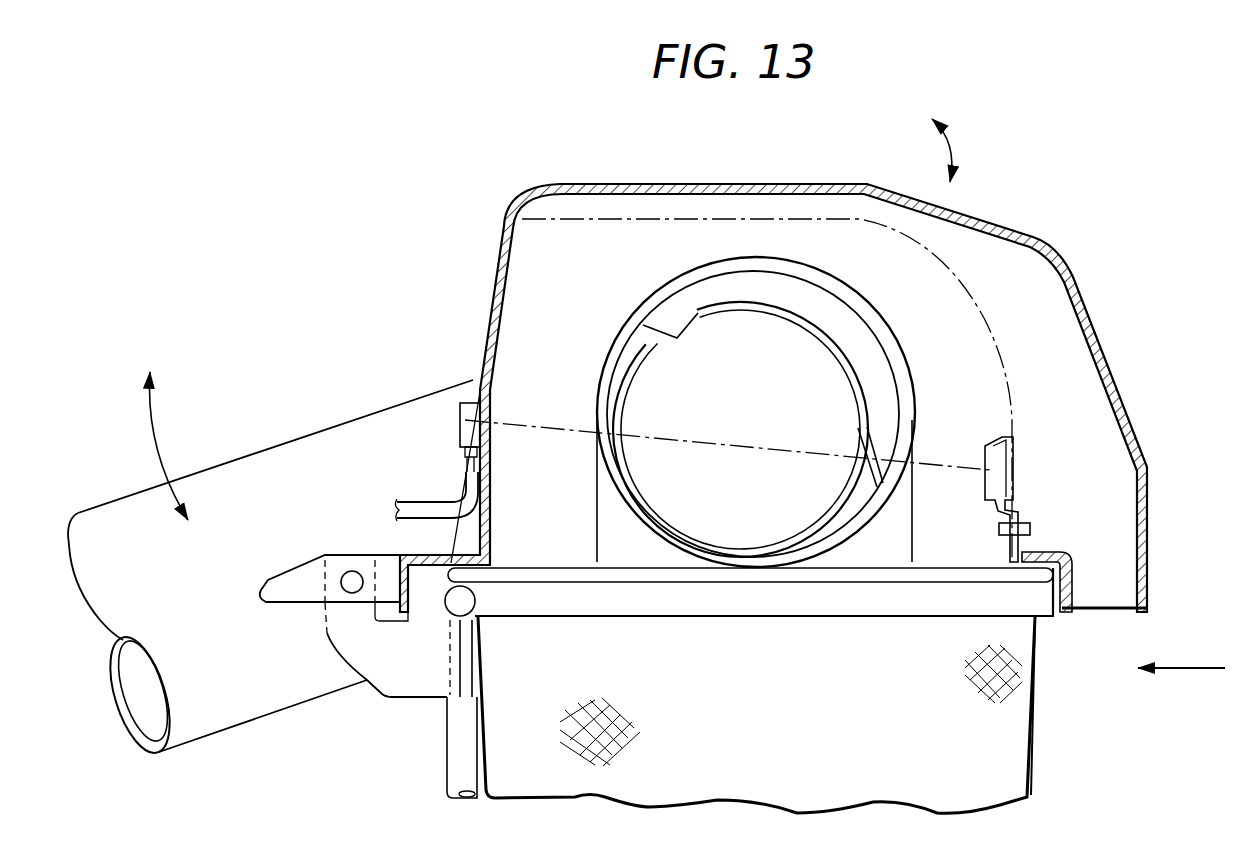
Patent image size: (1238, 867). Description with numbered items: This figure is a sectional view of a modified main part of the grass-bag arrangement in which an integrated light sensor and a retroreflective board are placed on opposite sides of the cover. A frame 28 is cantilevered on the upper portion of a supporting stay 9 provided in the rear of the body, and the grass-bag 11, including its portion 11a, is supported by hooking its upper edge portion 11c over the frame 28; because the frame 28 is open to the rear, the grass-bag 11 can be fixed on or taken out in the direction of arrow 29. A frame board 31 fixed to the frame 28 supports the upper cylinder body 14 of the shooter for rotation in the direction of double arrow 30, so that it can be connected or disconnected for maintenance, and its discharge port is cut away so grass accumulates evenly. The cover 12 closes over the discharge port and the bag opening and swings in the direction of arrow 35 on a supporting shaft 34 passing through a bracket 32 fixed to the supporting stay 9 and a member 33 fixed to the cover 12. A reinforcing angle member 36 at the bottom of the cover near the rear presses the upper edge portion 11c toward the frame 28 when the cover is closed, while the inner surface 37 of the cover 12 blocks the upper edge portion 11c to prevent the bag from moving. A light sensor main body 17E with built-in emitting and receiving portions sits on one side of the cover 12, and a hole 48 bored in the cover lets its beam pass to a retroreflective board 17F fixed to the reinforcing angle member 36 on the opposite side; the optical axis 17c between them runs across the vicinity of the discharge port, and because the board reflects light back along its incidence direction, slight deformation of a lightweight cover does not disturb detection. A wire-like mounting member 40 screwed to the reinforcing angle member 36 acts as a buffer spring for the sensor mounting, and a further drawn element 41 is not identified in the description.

The supporting stay 9 is at (452, 745).
The grass-bag 11 is at (1050, 739).
The grass-bag portion 11a is at (1018, 778).
The upper edge portion 11c is at (515, 567).
The cover 12 is at (1028, 232).
The upper cylinder body 14 is at (623, 347).
The optical axis 17c is at (743, 452).
The light sensor main body 17E is at (460, 430).
The retroreflective board 17F is at (988, 452).
The frame 28 is at (752, 616).
The arrow 29 is at (1195, 668).
The double arrow 30 is at (158, 400).
The frame board 31 is at (608, 545).
The bracket 32 is at (388, 680).
The member 33 is at (295, 598).
The supporting shaft 34 is at (354, 574).
The arrow 35 is at (946, 136).
The reinforcing angle member 36 is at (1008, 558).
The inner surface 37 is at (1057, 614).
The wire-like mounting member 40 is at (397, 502).
The cover inner outline 41 is at (672, 220).
The hole 48 is at (488, 423).